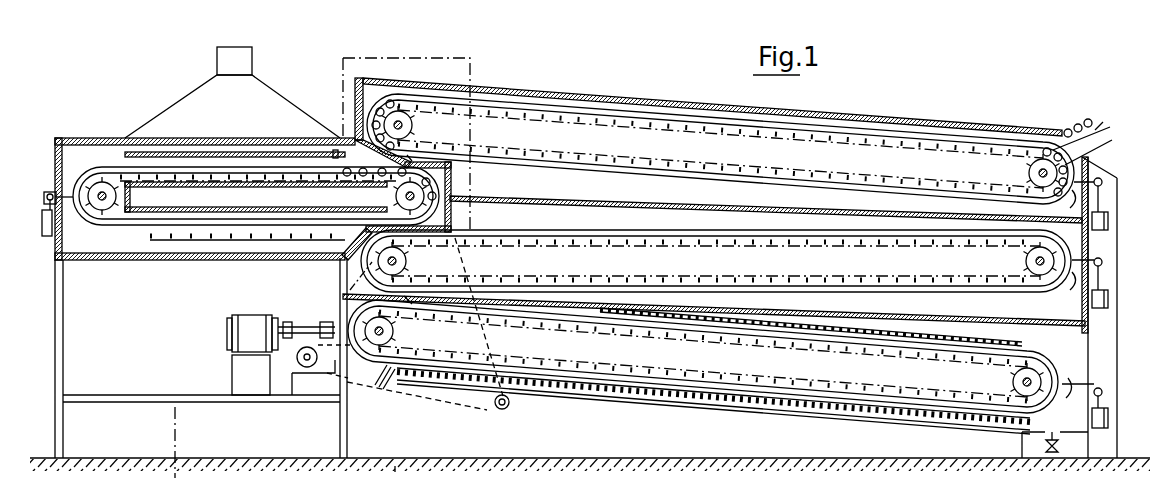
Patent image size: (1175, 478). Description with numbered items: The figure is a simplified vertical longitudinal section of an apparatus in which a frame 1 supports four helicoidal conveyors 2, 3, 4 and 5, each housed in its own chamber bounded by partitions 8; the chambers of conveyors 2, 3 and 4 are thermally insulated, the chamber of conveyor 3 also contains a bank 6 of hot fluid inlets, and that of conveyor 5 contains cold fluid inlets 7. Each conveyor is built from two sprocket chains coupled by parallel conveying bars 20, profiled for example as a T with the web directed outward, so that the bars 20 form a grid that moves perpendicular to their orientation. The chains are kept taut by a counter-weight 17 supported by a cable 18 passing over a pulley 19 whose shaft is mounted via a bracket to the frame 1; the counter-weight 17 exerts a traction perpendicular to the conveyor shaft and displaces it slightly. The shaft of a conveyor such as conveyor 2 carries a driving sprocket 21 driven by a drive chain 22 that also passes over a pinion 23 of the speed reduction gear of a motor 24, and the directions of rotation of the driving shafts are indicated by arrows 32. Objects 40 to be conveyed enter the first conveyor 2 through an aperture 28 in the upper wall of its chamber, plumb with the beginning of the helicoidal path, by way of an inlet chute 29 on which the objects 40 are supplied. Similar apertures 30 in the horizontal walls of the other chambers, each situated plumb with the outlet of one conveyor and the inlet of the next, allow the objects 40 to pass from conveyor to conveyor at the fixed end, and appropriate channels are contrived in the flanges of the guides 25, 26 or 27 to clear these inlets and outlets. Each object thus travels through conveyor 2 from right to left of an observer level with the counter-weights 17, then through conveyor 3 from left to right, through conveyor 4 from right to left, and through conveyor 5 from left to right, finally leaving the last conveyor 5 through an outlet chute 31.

The frame 1 is at (341, 422).
The first helicoidal conveyor 2 is at (578, 146).
The helicoidal conveyor 3 is at (172, 191).
The helicoidal conveyor 4 is at (588, 259).
The last helicoidal conveyor 5 is at (686, 358).
The bank of hot fluid inlets 6 is at (227, 242).
The cold fluid inlets 7 is at (560, 390).
The partitions 8 is at (218, 152).
The counter-weight 17 is at (42, 236).
The cable 18 is at (43, 200).
The pulley 19 is at (48, 194).
The conveying bars 20 is at (408, 108).
The driving sprocket 21 is at (394, 472).
The drive chain 22 is at (470, 260).
The pinion 23 is at (300, 338).
The motor 24 is at (247, 328).
The guide 25 is at (853, 128).
The guide 26 is at (637, 170).
The guide 27 is at (375, 80).
The aperture 28 is at (1062, 128).
The inlet chute 29 is at (1098, 136).
The apertures 30 is at (410, 156).
The outlet chute 31 is at (389, 386).
The arrows 32 is at (413, 126).
The objects to be conveyed 40 is at (723, 138).